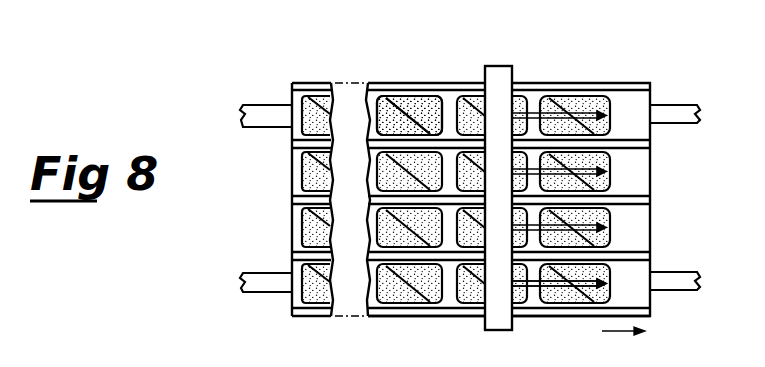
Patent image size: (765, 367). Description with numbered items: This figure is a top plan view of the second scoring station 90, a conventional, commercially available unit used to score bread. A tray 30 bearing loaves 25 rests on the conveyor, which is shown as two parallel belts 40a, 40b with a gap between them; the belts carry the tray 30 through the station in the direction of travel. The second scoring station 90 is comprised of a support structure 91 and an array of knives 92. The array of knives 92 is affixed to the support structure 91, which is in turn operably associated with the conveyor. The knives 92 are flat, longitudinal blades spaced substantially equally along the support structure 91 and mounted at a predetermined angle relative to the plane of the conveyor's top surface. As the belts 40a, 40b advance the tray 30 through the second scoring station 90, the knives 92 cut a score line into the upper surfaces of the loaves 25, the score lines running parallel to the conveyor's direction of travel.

The second scoring station 90 is at (332, 52).
The loaves 25 is at (405, 106).
The tray 30 is at (560, 83).
The parallel belt 40a is at (266, 100).
The parallel belt 40b is at (268, 294).
The support structure 91 is at (490, 318).
The array of knives 92 is at (561, 270).